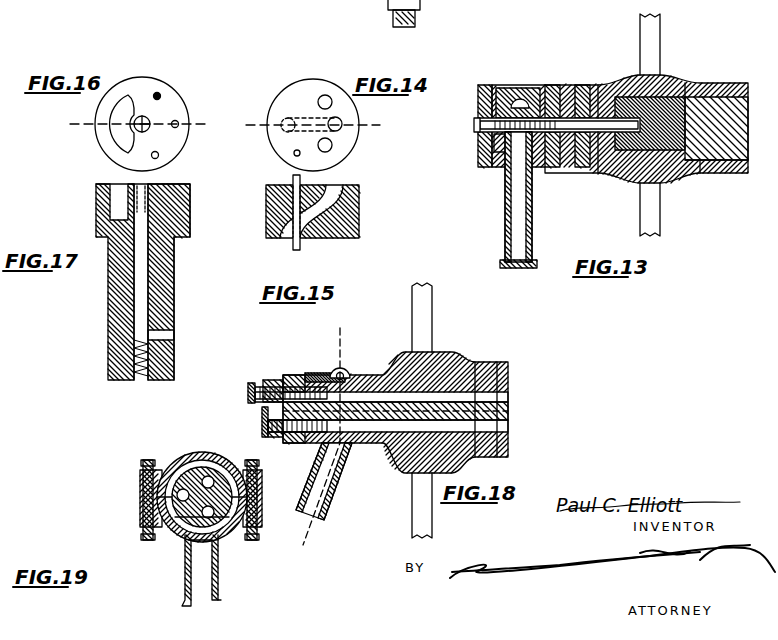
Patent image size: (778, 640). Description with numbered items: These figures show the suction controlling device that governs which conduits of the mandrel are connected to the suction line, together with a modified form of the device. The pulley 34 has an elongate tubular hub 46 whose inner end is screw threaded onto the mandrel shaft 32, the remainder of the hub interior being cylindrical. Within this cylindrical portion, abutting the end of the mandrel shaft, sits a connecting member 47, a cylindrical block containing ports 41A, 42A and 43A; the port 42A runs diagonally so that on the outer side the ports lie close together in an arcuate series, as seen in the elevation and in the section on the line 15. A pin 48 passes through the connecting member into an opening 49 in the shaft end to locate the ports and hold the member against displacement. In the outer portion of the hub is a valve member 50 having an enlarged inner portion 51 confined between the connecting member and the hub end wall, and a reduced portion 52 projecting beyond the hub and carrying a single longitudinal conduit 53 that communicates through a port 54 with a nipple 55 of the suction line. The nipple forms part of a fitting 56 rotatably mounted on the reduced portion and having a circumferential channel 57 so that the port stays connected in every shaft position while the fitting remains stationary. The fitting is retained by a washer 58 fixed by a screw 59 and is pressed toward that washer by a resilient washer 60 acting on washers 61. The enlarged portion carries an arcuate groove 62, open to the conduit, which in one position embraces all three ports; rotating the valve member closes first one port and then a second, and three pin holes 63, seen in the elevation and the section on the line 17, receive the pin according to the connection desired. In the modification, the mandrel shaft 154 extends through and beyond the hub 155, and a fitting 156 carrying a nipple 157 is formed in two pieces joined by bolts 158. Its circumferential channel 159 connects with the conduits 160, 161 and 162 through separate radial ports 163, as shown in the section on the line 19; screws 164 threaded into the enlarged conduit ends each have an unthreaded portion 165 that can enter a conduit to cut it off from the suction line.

In FIG. 14, the section line 15— 15 is at (317, 126).
In FIG. 16, the section line 17— 17 is at (138, 125).
In FIG. 18, the section line 19— 19 is at (326, 436).
In FIG. 13, the mandrel shaft 32 is at (716, 83).
In FIG. 13, the pulley 34 is at (655, 30).
In FIG. 14, the port 41A is at (330, 96).
In FIG. 14, the port 42A is at (343, 123).
In FIG. 15, the port 42A is at (322, 215).
In FIG. 14, the port 43A is at (329, 149).
In FIG. 13, the tubular hub 46 is at (673, 178).
In FIG. 14, the connecting member 47 is at (304, 90).
In FIG. 13, the connecting member 47 is at (668, 85).
In FIG. 15, the pin 48 is at (296, 240).
In FIG. 13, the pin 48 is at (631, 182).
In FIG. 13, the opening 49 is at (708, 174).
In FIG. 17, the valve member 50 is at (162, 234).
In FIG. 13, the valve member 50 is at (598, 170).
In FIG. 16, the enlarged inner portion 51 is at (180, 106).
In FIG. 17, the enlarged inner portion 51 is at (186, 214).
In FIG. 13, the enlarged inner portion 51 is at (612, 112).
In FIG. 17, the reduced portion 52 is at (175, 300).
In FIG. 13, the reduced portion 52 is at (550, 92).
In FIG. 16, the longitudinal conduit 53 is at (142, 116).
In FIG. 17, the longitudinal conduit 53 is at (140, 313).
In FIG. 13, the longitudinal conduit 53 is at (572, 150).
In FIG. 17, the port 54 is at (162, 337).
In FIG. 13, the port 54 is at (496, 160).
In FIG. 13, the nipple 55 is at (508, 220).
In FIG. 13, the fitting 56 is at (520, 88).
In FIG. 13, the circumferential channel 57 is at (523, 100).
In FIG. 13, the washer 58 is at (480, 96).
In FIG. 13, the screw 59 is at (476, 126).
In FIG. 13, the resilient washer 60 is at (578, 98).
In FIG. 13, the washers 61 is at (562, 168).
In FIG. 16, the arcuate groove 62 is at (120, 132).
In FIG. 16, the pin holes 63 is at (156, 151).
In FIG. 18, the mandrel shaft 154 is at (500, 385).
In FIG. 19, the mandrel shaft 154 is at (217, 478).
In FIG. 18, the hub 155 is at (470, 363).
In FIG. 18, the fitting 156 is at (322, 375).
In FIG. 19, the fitting 156 is at (167, 463).
In FIG. 18, the nipple 157 is at (343, 486).
In FIG. 19, the nipple 157 is at (212, 570).
In FIG. 19, the bolts 158 is at (152, 485).
In FIG. 18, the circumferential channel 159 is at (347, 371).
In FIG. 19, the circumferential channel 159 is at (208, 476).
In FIG. 18, the conduit 160 is at (498, 398).
In FIG. 19, the conduit 160 is at (198, 473).
In FIG. 18, the conduit 161 is at (500, 426).
In FIG. 19, the conduit 161 is at (180, 535).
In FIG. 18, the conduit 162 is at (500, 413).
In FIG. 19, the conduit 162 is at (181, 498).
In FIG. 18, the radial ports 163 is at (336, 372).
In FIG. 19, the radial ports 163 is at (212, 516).
In FIG. 18, the screws 164 is at (262, 392).
In FIG. 18, the unthreaded portion 165 is at (296, 378).